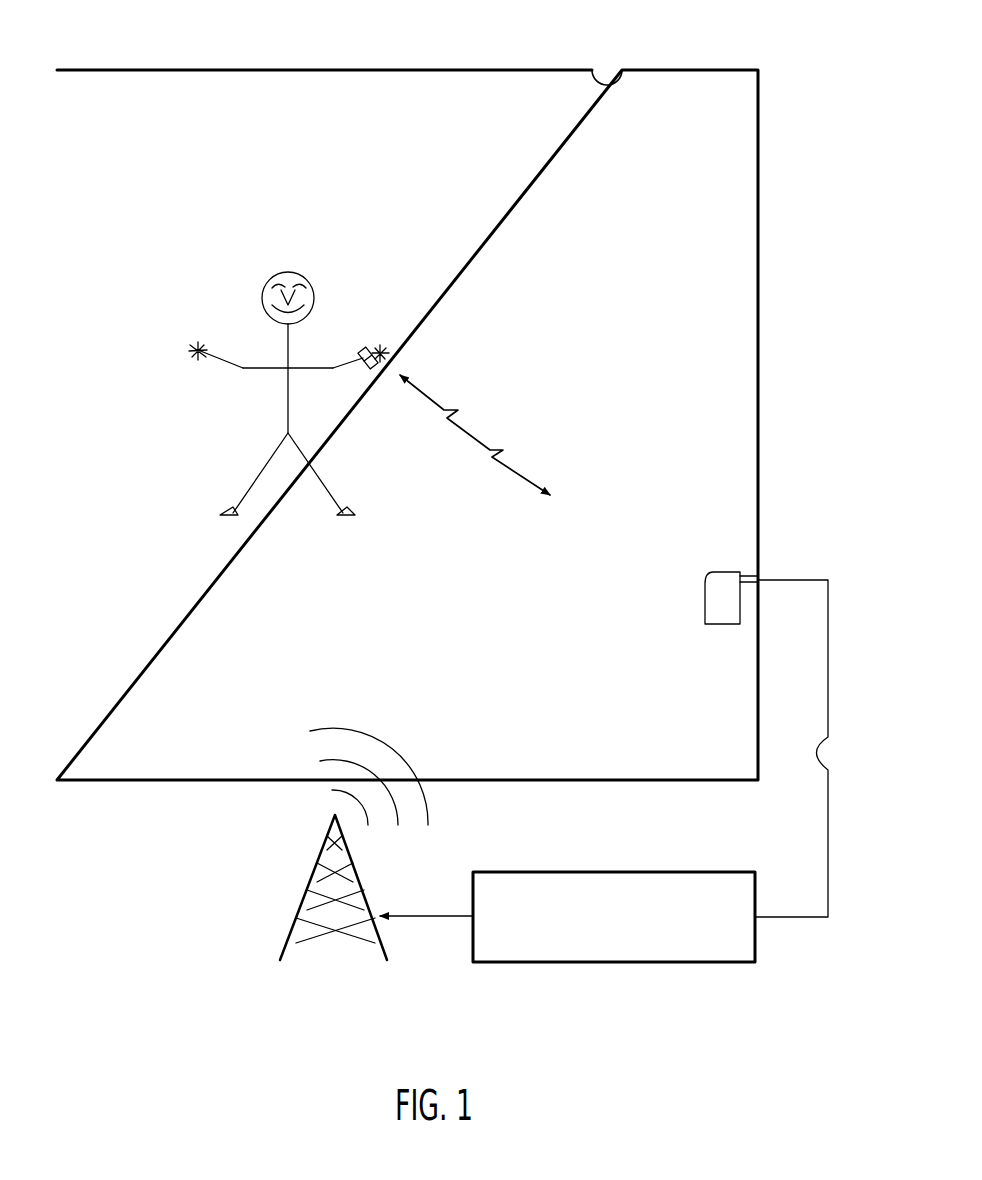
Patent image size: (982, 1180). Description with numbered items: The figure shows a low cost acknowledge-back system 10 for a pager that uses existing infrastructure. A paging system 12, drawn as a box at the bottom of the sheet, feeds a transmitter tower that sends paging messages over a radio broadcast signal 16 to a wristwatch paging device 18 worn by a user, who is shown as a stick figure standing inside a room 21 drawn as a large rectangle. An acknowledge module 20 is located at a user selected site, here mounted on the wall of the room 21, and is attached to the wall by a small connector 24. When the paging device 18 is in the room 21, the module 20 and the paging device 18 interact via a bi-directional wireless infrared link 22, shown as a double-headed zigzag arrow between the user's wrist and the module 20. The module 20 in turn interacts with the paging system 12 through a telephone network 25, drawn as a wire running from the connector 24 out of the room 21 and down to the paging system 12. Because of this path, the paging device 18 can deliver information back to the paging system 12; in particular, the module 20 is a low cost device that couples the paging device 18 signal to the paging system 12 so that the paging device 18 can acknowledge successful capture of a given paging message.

The acknowledge-back system 10 is at (806, 280).
The paging system 12 is at (715, 956).
The radio broadcast signal 16 is at (410, 753).
The wristwatch paging device 18 is at (365, 348).
The acknowledge module 20 is at (717, 613).
The room 21 is at (618, 75).
The bi-directional wireless infrared link 22 is at (497, 442).
The wall connector 24 is at (748, 572).
The telephone network 25 is at (825, 767).